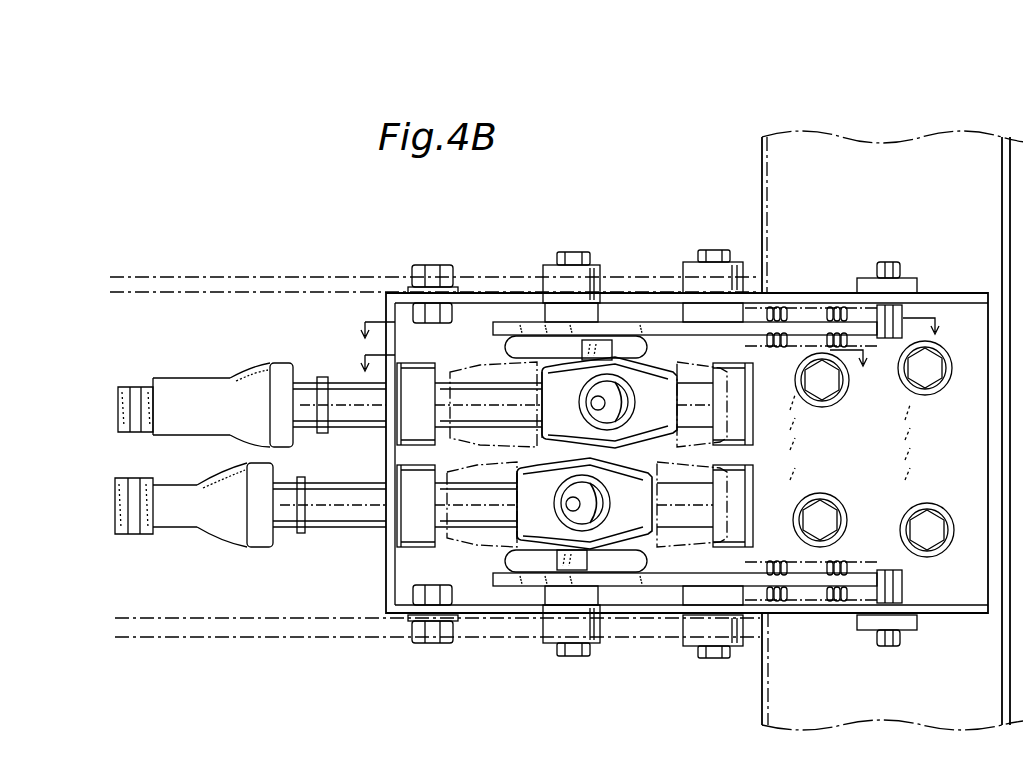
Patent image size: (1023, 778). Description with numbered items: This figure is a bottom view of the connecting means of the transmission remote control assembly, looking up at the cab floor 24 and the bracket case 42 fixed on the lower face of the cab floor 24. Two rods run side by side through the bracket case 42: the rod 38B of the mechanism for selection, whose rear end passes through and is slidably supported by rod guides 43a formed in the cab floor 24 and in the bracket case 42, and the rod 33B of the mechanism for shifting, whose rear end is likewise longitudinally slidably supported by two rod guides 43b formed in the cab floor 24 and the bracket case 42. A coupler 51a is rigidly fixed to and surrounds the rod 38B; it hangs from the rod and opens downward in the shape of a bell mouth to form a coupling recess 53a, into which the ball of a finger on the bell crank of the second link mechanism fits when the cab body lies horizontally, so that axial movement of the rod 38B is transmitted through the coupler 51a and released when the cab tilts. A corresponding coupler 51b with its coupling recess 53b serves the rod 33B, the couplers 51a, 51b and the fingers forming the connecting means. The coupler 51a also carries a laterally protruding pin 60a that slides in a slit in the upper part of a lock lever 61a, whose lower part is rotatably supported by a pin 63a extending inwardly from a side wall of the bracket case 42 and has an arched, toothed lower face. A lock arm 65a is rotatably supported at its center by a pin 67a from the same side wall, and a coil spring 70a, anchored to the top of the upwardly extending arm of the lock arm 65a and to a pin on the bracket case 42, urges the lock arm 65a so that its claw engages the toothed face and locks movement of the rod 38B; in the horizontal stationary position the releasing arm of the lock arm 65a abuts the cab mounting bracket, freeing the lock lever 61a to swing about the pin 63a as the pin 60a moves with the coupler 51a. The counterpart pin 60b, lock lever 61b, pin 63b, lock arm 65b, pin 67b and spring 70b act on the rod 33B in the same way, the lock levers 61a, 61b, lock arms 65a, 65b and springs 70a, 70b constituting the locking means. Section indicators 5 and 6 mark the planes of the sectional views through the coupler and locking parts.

The cab floor 24 is at (264, 275).
The bracket case 42 is at (386, 293).
The section line 5 is at (614, 368).
The section line 6 is at (650, 328).
The rod 38B is at (342, 382).
The rod 33B is at (317, 531).
The rod guides 43a is at (397, 423).
The rod guides 43b is at (397, 540).
The coupler 51a is at (655, 385).
The coupler 51b is at (635, 540).
The coupling recess 53a is at (627, 400).
The lower valve ball 53b is at (600, 520).
The pin 60a is at (600, 345).
The lower clamp strap 60b is at (555, 565).
The lock lever 61a is at (518, 330).
The lock lever 61b is at (512, 588).
The pin 63a is at (566, 252).
The lower bar guide block 63b is at (576, 658).
The lock arm 65a is at (742, 330).
The lock arm 65b is at (740, 583).
The pin 67a is at (718, 262).
The lower guide block 67b is at (716, 658).
The coil spring 70a is at (830, 310).
The spring 70b is at (847, 605).